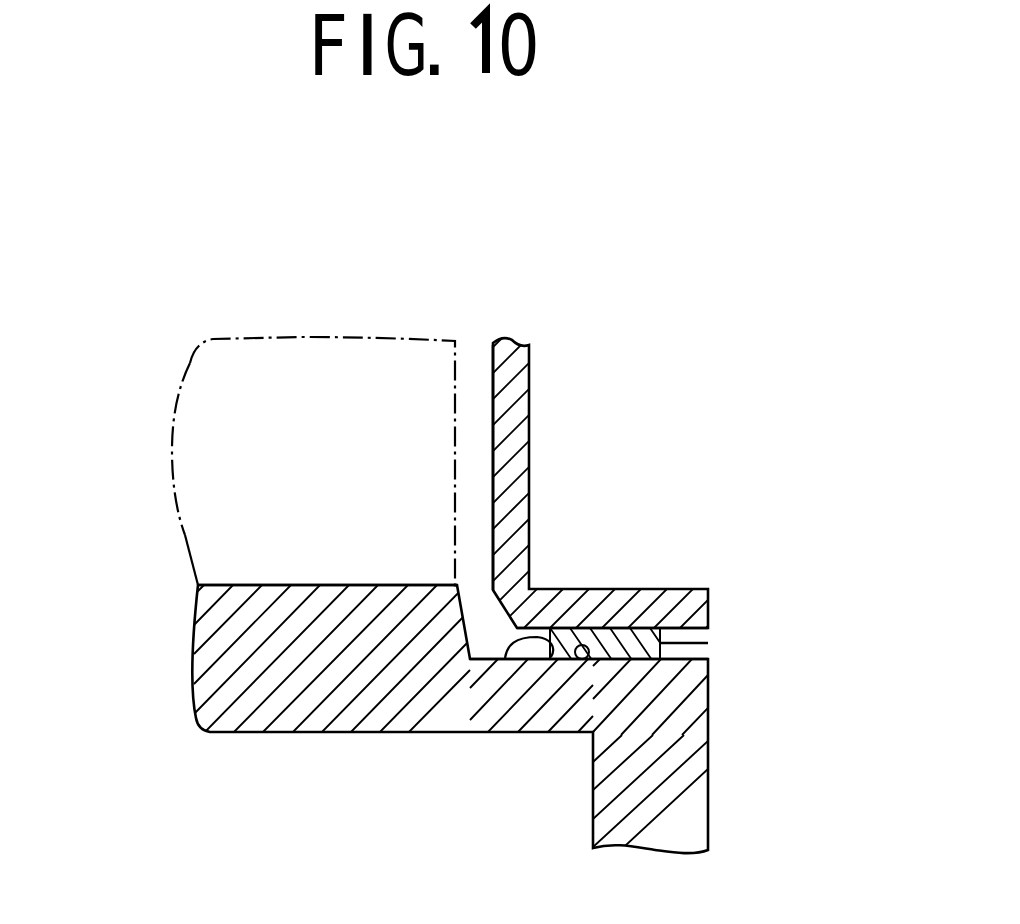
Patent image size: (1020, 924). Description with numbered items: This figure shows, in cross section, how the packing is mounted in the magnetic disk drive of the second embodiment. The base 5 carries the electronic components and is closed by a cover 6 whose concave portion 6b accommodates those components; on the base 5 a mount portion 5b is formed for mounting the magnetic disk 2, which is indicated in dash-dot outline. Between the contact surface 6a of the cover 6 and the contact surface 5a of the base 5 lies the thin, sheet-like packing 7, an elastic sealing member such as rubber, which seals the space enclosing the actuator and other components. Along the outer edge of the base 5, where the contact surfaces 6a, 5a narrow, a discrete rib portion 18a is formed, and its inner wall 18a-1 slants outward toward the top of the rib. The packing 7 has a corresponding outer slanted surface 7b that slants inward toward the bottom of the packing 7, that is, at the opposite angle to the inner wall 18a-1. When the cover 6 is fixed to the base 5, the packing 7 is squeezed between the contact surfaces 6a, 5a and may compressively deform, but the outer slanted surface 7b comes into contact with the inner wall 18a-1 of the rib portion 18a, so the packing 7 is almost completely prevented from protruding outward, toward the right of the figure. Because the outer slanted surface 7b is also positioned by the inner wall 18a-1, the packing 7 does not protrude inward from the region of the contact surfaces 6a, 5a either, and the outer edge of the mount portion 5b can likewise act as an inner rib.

The magnetic disk 2 is at (253, 363).
The base 5 is at (214, 722).
The contact surface of the base 5a is at (580, 647).
The mount portion 5b is at (243, 583).
The cover 6 is at (530, 368).
The contact surface of the cover 6a is at (577, 597).
The concave portion of the cover 6b is at (486, 440).
The packing 7 is at (547, 638).
The outer slanted surface of the packing 7b is at (663, 648).
The rib portion 18a is at (700, 652).
The slanted inner wall of the rib portion 18a-1 is at (657, 642).